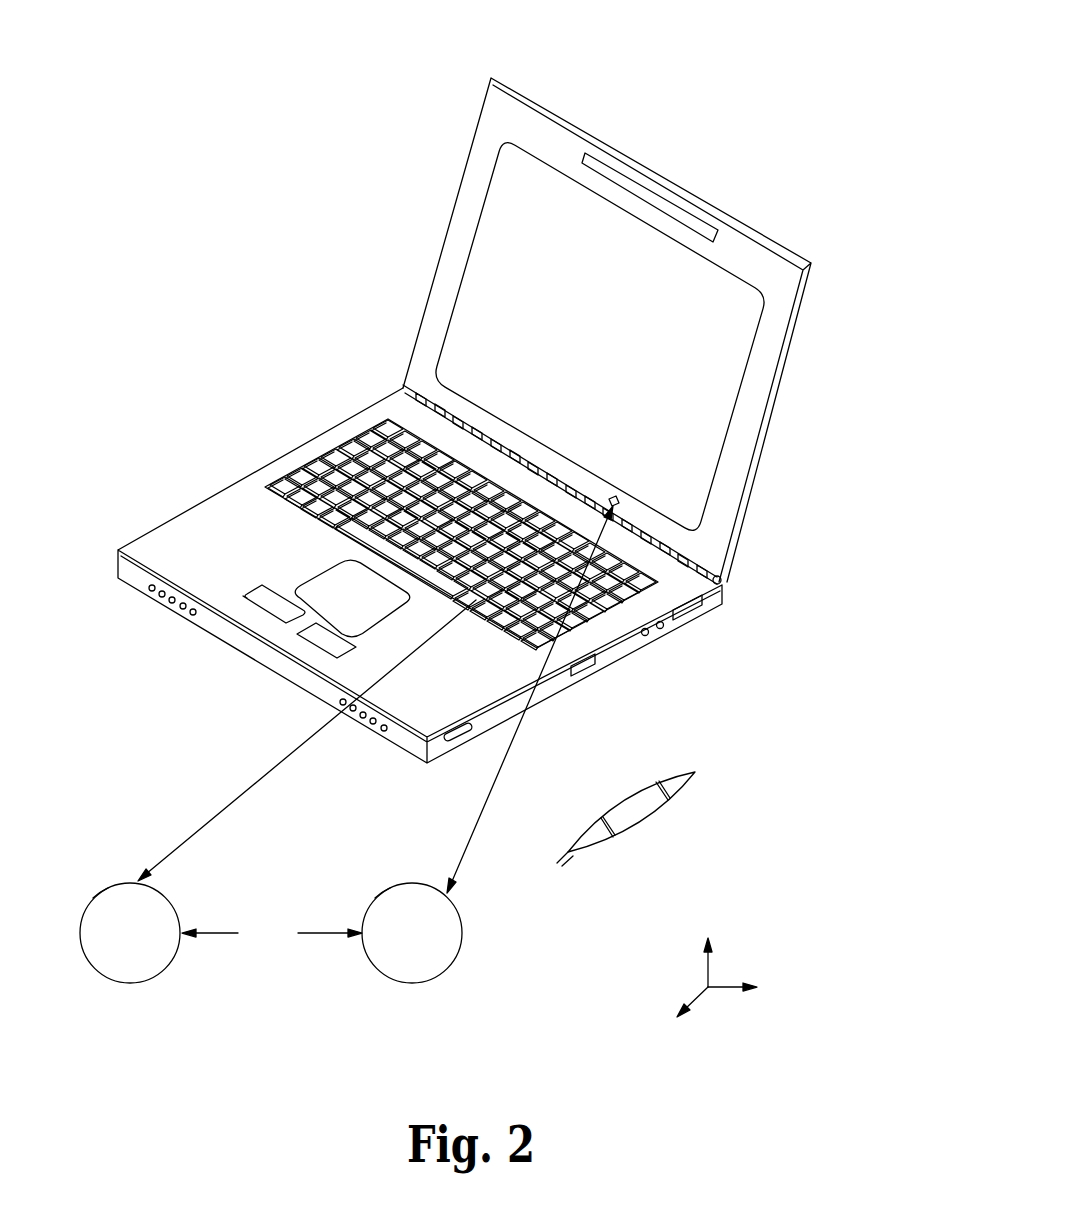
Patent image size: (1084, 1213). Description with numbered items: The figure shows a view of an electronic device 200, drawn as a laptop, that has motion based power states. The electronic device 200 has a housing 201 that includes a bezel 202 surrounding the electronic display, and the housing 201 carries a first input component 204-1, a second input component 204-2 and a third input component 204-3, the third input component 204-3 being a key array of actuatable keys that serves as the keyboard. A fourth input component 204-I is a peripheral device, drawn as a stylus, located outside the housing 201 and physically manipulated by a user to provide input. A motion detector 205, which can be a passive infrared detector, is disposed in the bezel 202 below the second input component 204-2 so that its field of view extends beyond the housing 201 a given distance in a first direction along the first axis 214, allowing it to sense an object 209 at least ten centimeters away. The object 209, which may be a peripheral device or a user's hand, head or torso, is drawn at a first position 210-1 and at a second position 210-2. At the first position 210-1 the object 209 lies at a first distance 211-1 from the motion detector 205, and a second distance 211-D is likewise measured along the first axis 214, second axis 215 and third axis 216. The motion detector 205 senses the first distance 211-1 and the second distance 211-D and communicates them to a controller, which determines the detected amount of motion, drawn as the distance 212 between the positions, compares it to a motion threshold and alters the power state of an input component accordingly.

The electronic device 200 is at (297, 147).
The housing 201 is at (492, 80).
The bezel 202 is at (733, 443).
The first input component 204-1 is at (333, 640).
The second input component 204-2 is at (547, 160).
The third input component 204-3 is at (597, 616).
The fourth input component 204-I is at (667, 814).
The motion detector 205 is at (640, 515).
The object 209 is at (90, 904).
The first position 210-1 is at (167, 968).
The second position 210-2 is at (437, 973).
The first distance 211-1 is at (307, 740).
The second distance 211-D is at (530, 699).
The distance 212 is at (272, 933).
The first axis 214 is at (676, 1016).
The second axis 215 is at (707, 950).
The third axis 216 is at (750, 987).